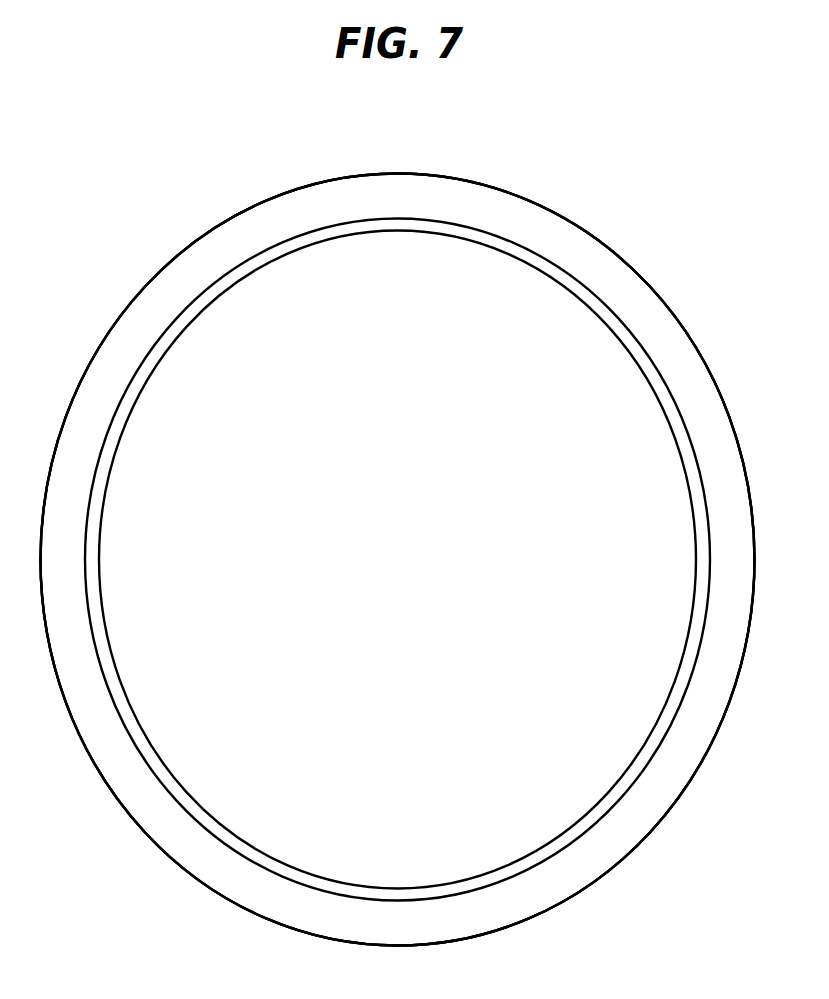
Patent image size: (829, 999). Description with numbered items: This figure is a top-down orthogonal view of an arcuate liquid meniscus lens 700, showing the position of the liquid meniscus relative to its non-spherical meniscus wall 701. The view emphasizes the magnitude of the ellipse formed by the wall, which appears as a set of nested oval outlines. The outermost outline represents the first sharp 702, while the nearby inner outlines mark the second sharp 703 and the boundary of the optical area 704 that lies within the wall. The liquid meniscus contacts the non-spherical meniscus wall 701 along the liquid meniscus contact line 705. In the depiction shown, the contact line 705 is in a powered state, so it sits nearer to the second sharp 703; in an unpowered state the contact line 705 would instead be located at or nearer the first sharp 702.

The ring structure 700 is at (645, 210).
The non-spherical meniscus wall 701 is at (130, 350).
The first sharp 702 is at (193, 240).
The second sharp 703 is at (272, 262).
The optical area 704 is at (335, 222).
The liquid meniscus contact line 705 is at (413, 527).